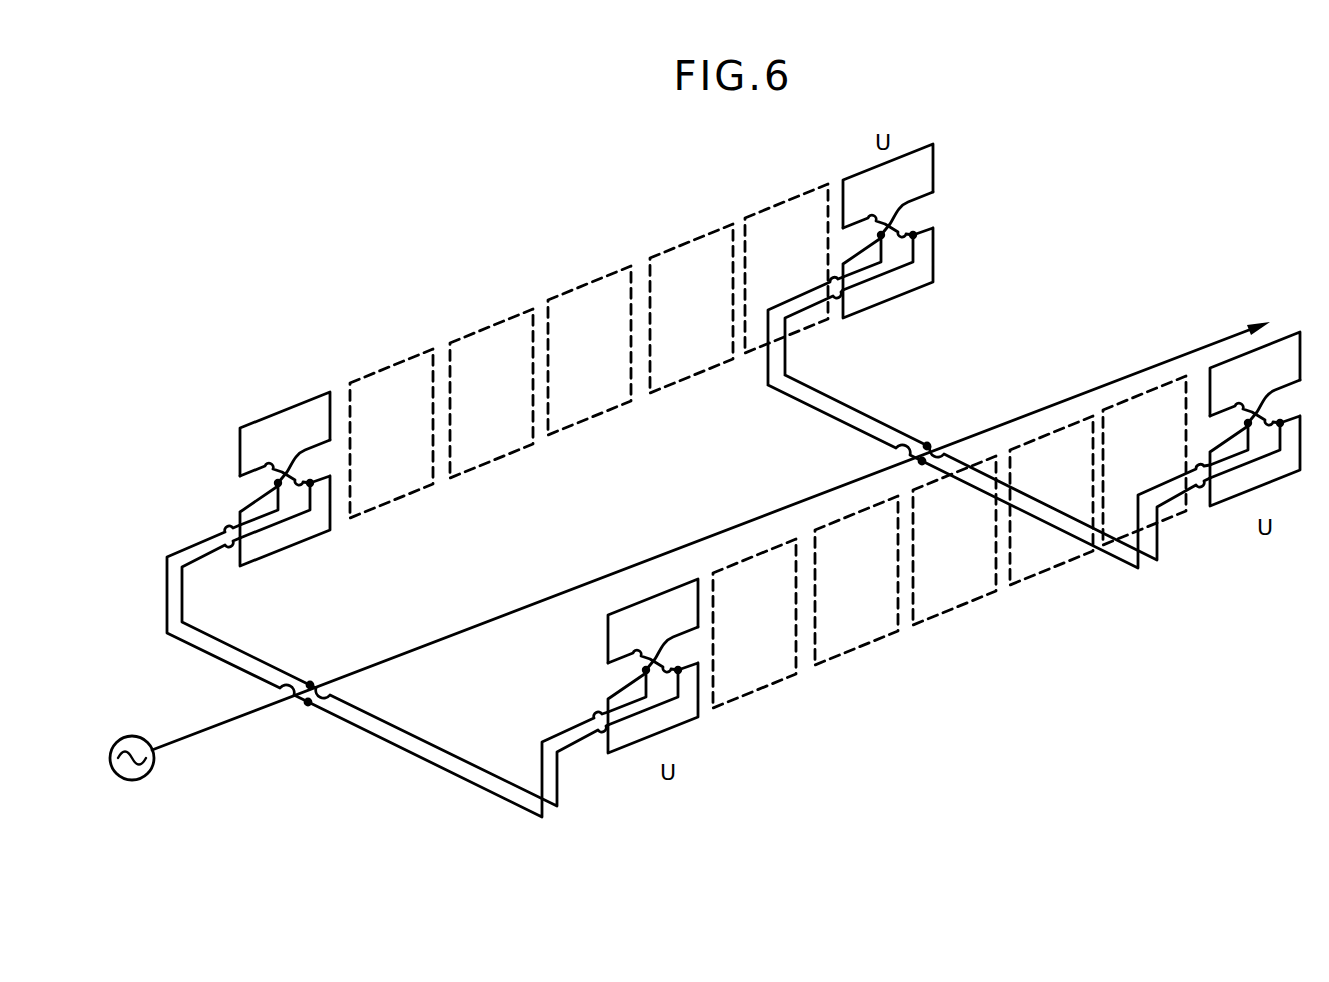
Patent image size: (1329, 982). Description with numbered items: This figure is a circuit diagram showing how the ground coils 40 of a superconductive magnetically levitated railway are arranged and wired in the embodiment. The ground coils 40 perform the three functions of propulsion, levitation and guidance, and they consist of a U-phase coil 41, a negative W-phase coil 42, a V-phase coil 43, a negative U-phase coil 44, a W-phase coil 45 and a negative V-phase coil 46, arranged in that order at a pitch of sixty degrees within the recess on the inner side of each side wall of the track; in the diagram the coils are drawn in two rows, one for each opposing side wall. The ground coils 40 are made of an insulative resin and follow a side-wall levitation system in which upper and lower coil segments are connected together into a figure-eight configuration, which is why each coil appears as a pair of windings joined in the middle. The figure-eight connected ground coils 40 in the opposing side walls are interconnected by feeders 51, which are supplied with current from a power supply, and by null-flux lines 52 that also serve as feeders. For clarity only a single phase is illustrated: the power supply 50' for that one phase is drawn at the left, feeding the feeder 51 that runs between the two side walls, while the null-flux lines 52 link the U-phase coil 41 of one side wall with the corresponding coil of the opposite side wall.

The ground coils 40 is at (537, 268).
The U-phase coil 41 is at (291, 548).
The negative W-phase coil 42 is at (389, 503).
The V-phase coil 43 is at (496, 462).
The negative U-phase coil 44 is at (600, 417).
The W-phase coil 45 is at (700, 375).
The negative V-phase coil 46 is at (797, 336).
The power supply 50' is at (147, 791).
The feeders 51 is at (240, 718).
The null-flux lines 52 is at (378, 740).